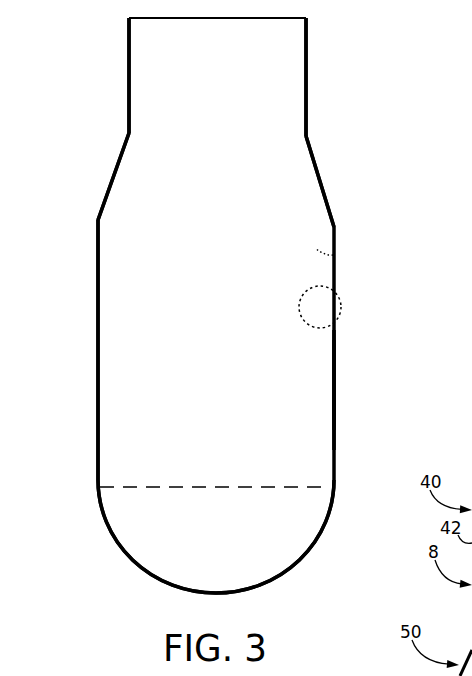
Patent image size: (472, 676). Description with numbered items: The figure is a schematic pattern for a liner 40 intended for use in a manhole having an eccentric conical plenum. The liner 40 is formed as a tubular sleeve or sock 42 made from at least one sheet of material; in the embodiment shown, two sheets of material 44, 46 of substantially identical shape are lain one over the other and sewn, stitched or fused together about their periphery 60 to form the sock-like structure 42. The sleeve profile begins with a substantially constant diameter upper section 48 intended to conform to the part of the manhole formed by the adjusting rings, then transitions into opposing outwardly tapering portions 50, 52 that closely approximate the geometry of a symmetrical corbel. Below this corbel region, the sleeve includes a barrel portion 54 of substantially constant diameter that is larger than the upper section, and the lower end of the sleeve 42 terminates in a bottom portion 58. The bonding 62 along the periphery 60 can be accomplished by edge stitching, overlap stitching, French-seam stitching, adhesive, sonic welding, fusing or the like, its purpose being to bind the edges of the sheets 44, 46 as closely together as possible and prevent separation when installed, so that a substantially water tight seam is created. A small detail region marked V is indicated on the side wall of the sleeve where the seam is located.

The storage vessel / tank 40 is at (86, 70).
The upper vessel section (neck) 42 is at (153, 133).
The interior volume 44 is at (230, 217).
The vessel side wall 46 is at (333, 255).
The upper wall portion 48 is at (324, 65).
The tapered shoulder transition 50 is at (100, 178).
The tapered shoulder wall 52 is at (337, 174).
The cylindrical body wall 54 is at (85, 314).
The rounded bottom 58 is at (93, 510).
The wall layer 60 is at (335, 385).
The inner wall layer 62 is at (330, 427).
The detail view V region V is at (342, 311).